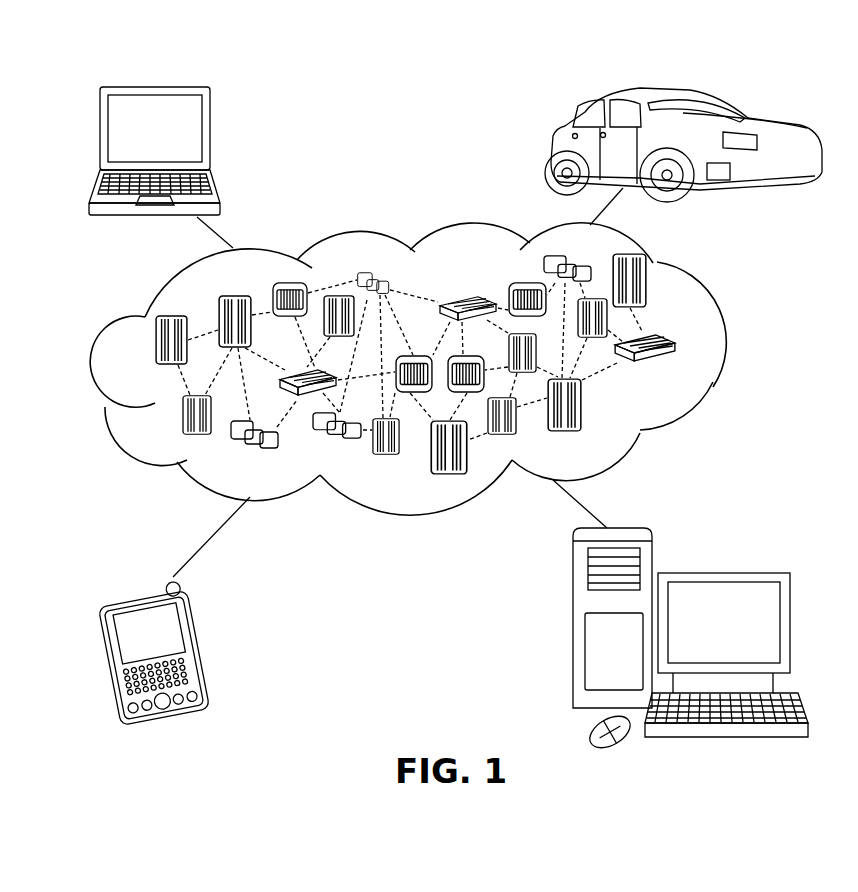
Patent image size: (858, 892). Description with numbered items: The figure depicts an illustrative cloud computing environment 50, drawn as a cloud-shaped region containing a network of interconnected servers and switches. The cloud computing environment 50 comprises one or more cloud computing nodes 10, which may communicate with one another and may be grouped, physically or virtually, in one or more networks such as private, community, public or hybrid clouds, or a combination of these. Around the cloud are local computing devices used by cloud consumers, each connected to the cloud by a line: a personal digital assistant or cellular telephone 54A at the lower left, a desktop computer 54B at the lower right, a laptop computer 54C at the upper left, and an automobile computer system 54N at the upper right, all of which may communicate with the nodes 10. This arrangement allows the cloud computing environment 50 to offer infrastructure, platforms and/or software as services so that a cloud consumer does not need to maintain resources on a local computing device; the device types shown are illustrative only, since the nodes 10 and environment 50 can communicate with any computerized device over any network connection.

The cloud computing nodes 10 is at (680, 373).
The cloud computing environment 50 is at (727, 352).
The personal digital assistant or cellular telephone 54A is at (203, 647).
The desktop computer 54B is at (723, 572).
The laptop computer 54C is at (208, 132).
The automobile computer system 54N is at (553, 152).